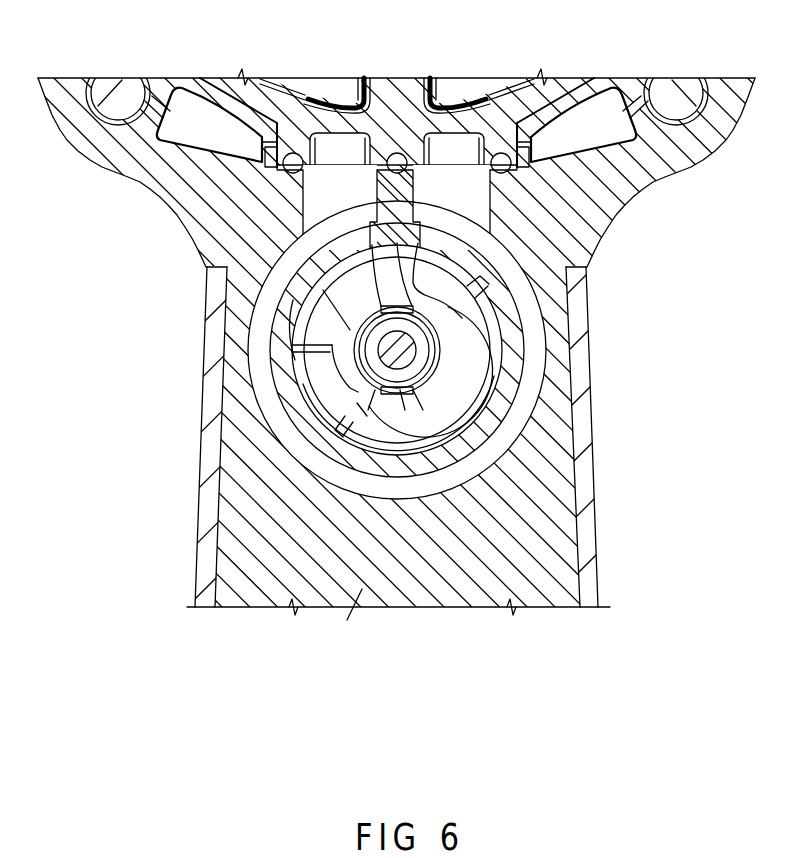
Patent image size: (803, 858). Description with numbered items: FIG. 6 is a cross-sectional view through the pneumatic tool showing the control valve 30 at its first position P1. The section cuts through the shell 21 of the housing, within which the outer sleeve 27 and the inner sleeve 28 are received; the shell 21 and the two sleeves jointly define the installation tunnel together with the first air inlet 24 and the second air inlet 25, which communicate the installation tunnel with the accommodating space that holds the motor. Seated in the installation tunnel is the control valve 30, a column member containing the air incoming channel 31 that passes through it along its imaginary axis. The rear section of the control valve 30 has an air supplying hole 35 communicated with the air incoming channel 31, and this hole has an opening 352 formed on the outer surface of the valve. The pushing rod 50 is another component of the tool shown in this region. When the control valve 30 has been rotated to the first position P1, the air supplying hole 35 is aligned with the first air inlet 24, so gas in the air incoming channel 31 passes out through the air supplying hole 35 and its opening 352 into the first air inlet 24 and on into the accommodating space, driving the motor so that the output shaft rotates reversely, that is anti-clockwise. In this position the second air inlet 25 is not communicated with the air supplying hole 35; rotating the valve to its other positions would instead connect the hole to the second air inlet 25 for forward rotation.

The shell 21 is at (357, 592).
The first air inlet 24 is at (343, 223).
The second air inlet 25 is at (455, 231).
The outer sleeve 27 is at (413, 492).
The inner sleeve 28 is at (447, 453).
The control valve 30 is at (462, 407).
The air incoming channel 31 is at (447, 354).
The air supplying hole 35 is at (360, 372).
The opening 352 is at (357, 306).
The pushing rod 50 is at (410, 385).
The first position P1 is at (294, 308).